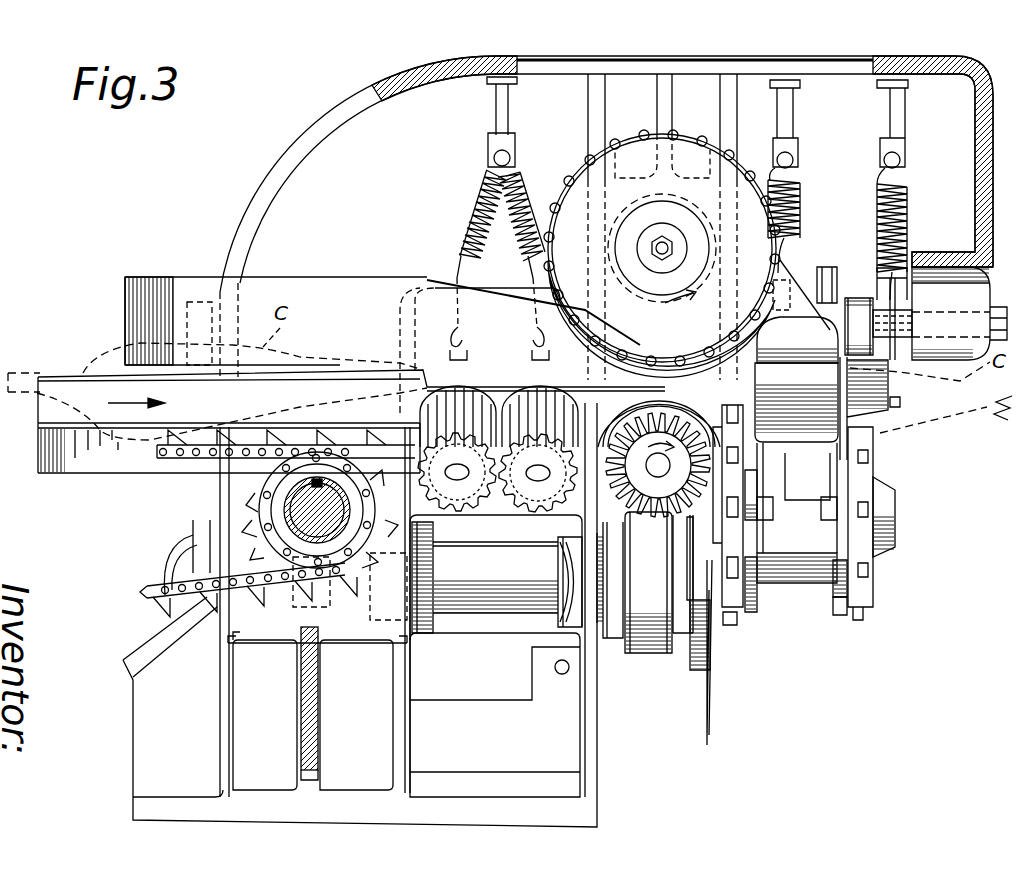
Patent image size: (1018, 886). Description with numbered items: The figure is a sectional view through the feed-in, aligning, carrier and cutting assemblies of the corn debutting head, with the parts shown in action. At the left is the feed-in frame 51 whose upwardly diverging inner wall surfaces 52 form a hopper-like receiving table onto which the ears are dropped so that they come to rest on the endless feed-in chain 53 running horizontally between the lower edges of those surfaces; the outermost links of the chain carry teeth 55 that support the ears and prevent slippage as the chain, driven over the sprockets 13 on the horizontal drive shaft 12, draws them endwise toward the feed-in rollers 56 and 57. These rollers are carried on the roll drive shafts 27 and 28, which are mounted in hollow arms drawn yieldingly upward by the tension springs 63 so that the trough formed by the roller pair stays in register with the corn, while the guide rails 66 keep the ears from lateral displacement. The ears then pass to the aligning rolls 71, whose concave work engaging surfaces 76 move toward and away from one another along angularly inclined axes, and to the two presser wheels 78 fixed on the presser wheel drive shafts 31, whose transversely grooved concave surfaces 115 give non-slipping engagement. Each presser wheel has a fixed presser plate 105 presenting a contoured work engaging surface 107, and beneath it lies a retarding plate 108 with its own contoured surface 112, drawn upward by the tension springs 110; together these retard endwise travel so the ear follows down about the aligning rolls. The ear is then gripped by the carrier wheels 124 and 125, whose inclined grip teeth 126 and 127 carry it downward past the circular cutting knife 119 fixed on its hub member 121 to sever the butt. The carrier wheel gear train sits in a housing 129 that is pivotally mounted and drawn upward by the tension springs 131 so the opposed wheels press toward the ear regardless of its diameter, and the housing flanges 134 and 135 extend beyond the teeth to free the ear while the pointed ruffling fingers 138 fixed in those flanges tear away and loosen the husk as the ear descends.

The horizontal drive shaft 12 is at (293, 527).
The feed-in chain drive sprockets 13 is at (250, 530).
The feed-in roll drive shaft 27 is at (460, 480).
The feed-in roll drive shaft 28 is at (532, 478).
The presser wheel drive shaft 31 is at (660, 252).
The frame 51 is at (80, 455).
The inner wall surfaces 52 is at (82, 375).
The endless feed-in chain 53 is at (232, 440).
The teeth 55 is at (172, 445).
The feed-in roller 56 is at (447, 497).
The feed-in roller 57 is at (550, 493).
The tension springs 63 is at (520, 178).
The guide rails 66 is at (313, 293).
The aligning rolls 71 is at (660, 497).
The work engaging concave surfaces 76 is at (640, 520).
The presser wheels 78 is at (703, 153).
The presser plate 105 is at (790, 337).
The work engaging surface 107 is at (812, 362).
The retarding plates 108 is at (792, 453).
The tension springs 110 is at (802, 200).
The work engaging surfaces 112 is at (805, 440).
The concave surfaces 115 is at (608, 346).
The circular cutting knife 119 is at (712, 714).
The hub members 121 is at (692, 660).
The carrier wheels 124 is at (737, 626).
The carrier wheels 125 is at (873, 593).
The grip teeth 126 is at (735, 423).
The grip teeth 127 is at (862, 503).
The housing 129 is at (818, 578).
The tension springs 131 is at (908, 180).
The flange 134 is at (760, 613).
The flange 135 is at (840, 615).
The fingers 138 is at (757, 518).